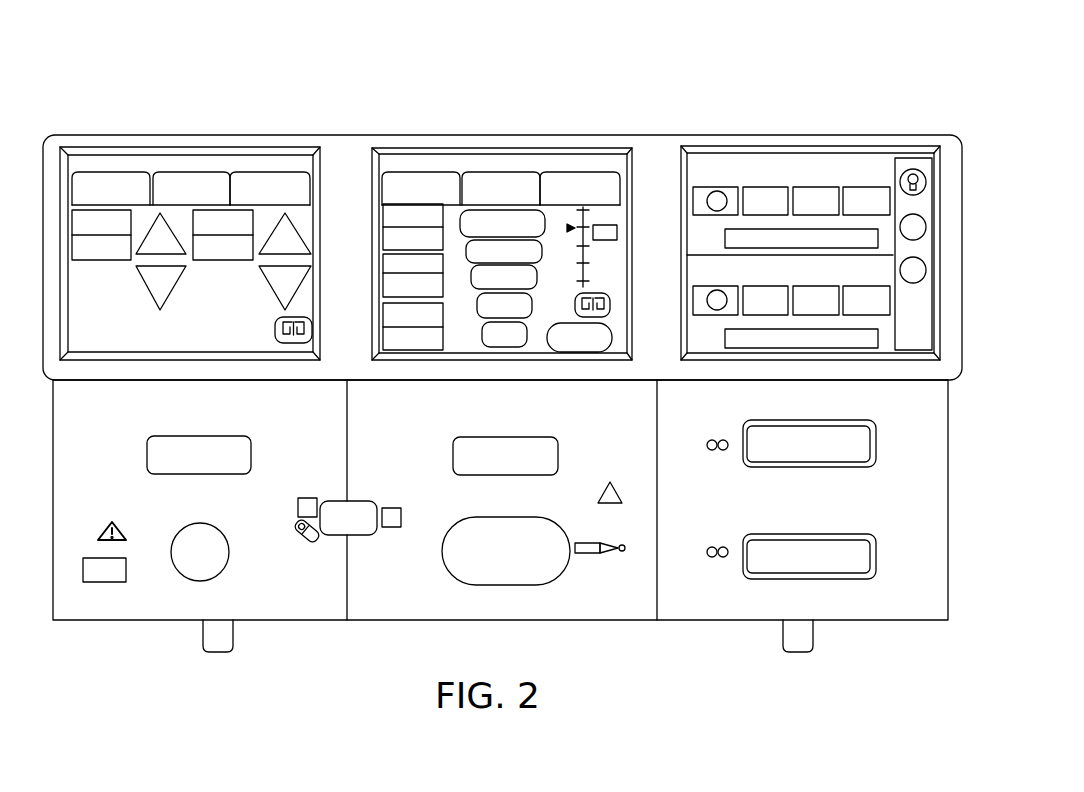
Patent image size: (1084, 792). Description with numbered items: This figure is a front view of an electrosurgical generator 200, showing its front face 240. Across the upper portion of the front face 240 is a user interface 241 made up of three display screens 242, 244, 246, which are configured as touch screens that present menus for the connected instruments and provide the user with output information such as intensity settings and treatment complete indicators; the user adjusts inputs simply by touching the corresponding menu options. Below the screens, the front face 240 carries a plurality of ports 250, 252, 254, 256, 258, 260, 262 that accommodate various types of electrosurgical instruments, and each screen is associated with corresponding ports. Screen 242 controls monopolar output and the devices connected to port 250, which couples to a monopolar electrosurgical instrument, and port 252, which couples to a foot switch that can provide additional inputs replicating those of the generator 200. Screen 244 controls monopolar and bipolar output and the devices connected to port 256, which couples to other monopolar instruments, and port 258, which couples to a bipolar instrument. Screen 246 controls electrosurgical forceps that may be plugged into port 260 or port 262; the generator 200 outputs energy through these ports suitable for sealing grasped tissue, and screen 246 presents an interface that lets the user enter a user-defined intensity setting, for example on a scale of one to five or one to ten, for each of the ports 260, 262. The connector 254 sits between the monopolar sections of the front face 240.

The generator 200 is at (842, 94).
The front face 240 is at (368, 135).
The user interface 241 is at (526, 105).
The display screen 242 is at (322, 162).
The display screen 244 is at (632, 206).
The display screen 246 is at (682, 336).
The port 250 is at (210, 436).
The port 252 is at (229, 553).
The port 254 is at (343, 500).
The port 256 is at (528, 437).
The port 258 is at (567, 572).
The port 260 is at (877, 443).
The port 262 is at (877, 556).